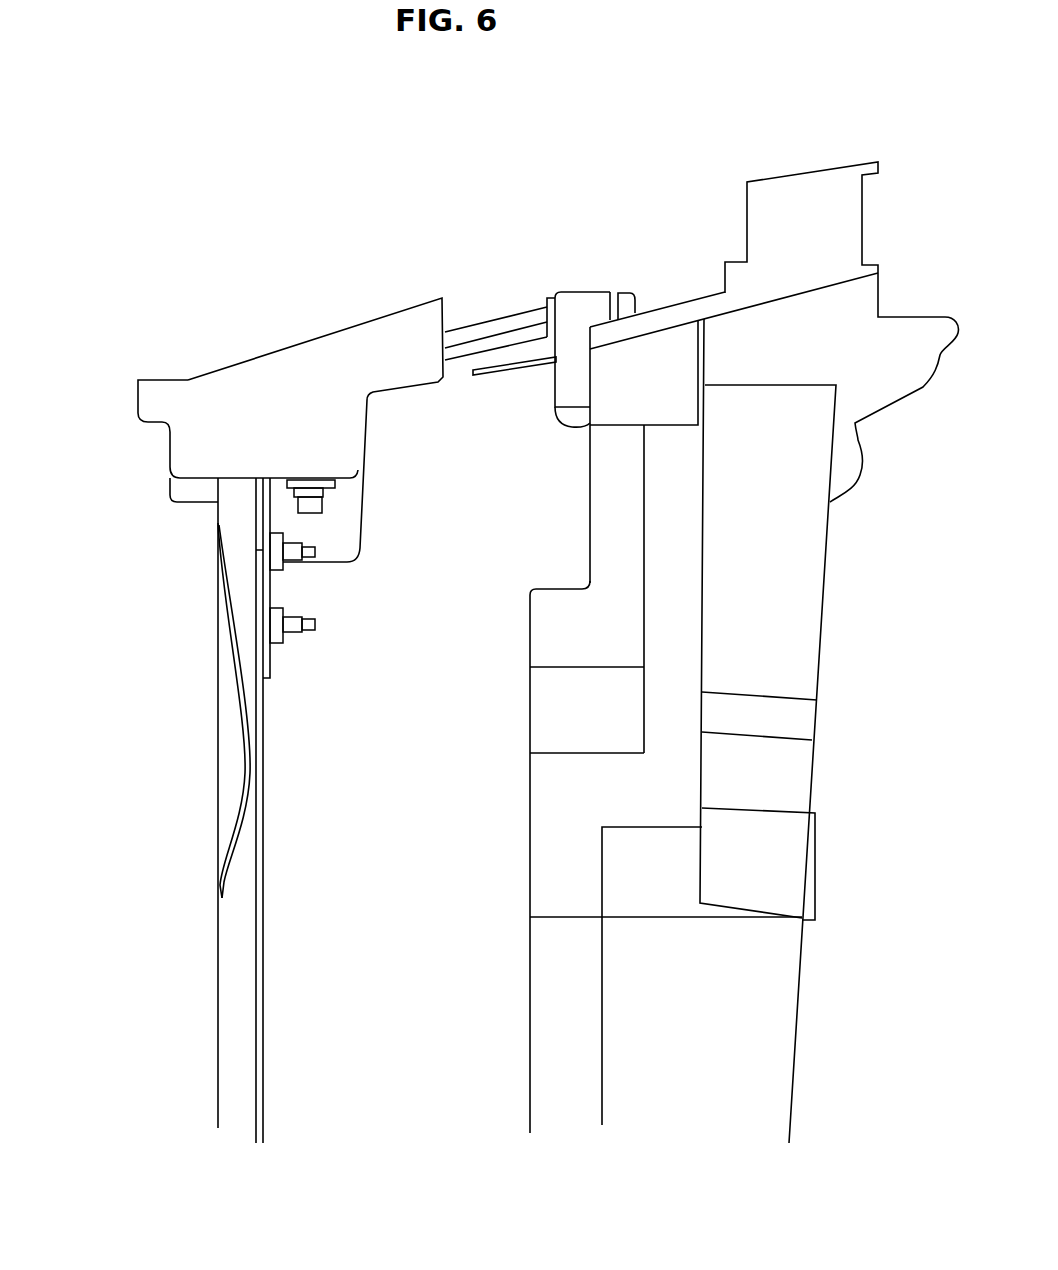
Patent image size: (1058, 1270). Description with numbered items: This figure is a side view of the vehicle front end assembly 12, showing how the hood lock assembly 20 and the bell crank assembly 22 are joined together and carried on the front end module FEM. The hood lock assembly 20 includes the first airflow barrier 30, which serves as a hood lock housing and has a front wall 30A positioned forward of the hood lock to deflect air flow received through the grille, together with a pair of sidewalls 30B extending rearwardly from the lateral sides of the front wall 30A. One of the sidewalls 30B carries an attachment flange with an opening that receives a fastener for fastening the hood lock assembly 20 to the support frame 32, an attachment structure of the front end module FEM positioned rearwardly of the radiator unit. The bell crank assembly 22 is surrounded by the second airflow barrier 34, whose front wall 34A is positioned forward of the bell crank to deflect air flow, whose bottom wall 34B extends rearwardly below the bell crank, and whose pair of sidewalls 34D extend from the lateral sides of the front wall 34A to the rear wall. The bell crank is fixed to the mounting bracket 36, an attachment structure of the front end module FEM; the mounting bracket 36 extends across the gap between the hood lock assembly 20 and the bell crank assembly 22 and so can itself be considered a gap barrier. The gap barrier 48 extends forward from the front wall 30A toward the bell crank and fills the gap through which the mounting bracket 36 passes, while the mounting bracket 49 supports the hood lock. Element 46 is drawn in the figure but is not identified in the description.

The vehicle front end assembly 12 is at (445, 249).
The hood lock assembly 20 is at (572, 228).
The bell crank assembly 22 is at (197, 338).
The first airflow barrier 30 is at (624, 257).
The front wall 30A is at (553, 395).
The sidewalls 30B is at (584, 420).
The support frame 32 is at (725, 1077).
The second airflow barrier 34 is at (125, 445).
The front wall 34A is at (138, 392).
The bottom wall 34B is at (253, 480).
The sidewalls 34D is at (197, 448).
The mounting bracket 36 is at (270, 590).
The mounting plate 46 is at (445, 305).
The gap barrier 48 is at (513, 372).
The mounting bracket 49 is at (467, 363).
The front end module FEM is at (482, 837).